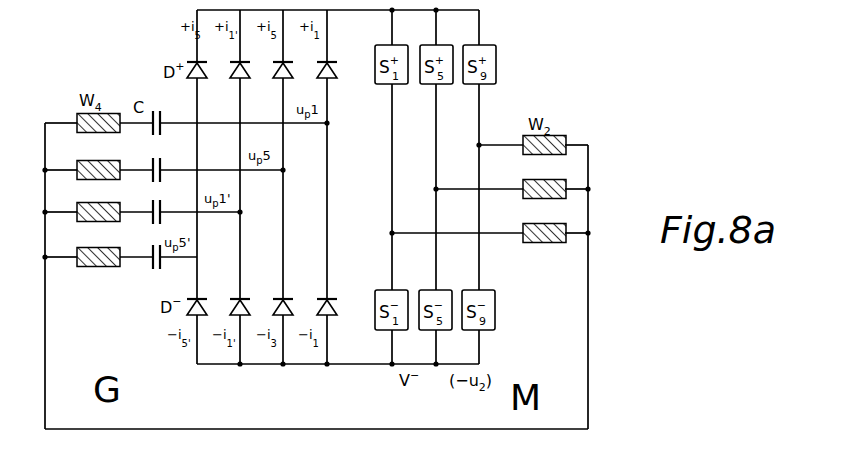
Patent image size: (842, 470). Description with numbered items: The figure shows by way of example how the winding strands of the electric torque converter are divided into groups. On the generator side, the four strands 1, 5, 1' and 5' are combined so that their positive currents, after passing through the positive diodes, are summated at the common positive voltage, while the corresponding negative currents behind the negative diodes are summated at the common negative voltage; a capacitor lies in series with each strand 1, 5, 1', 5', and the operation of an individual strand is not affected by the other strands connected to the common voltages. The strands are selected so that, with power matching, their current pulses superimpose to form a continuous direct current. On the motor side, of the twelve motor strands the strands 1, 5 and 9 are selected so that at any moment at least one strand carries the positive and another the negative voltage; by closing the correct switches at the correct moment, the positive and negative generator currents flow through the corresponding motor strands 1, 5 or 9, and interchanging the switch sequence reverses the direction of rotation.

The strand 1 is at (316, 130).
The strand 5 is at (316, 175).
The strand 1' is at (142, 209).
The strand 5' is at (121, 254).
The strand 9 is at (490, 230).